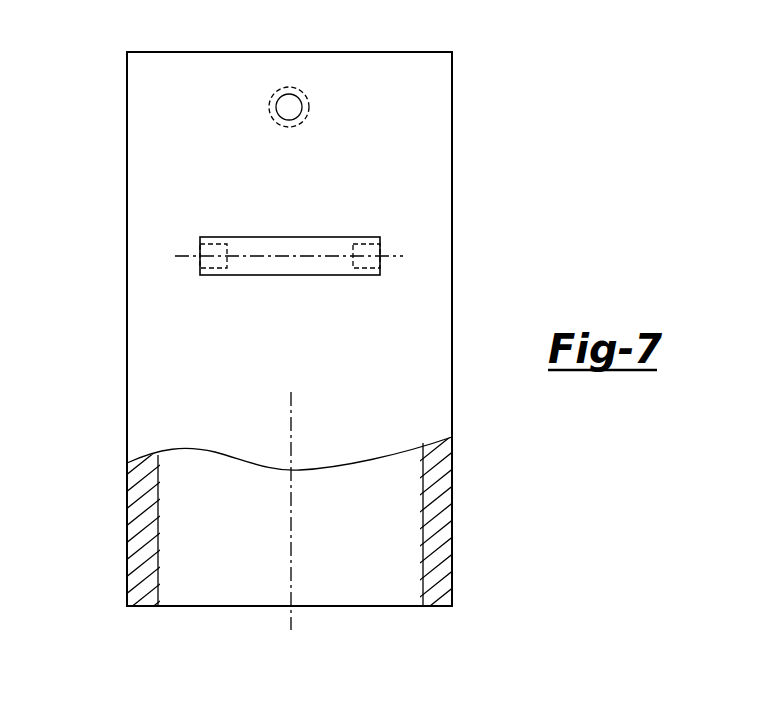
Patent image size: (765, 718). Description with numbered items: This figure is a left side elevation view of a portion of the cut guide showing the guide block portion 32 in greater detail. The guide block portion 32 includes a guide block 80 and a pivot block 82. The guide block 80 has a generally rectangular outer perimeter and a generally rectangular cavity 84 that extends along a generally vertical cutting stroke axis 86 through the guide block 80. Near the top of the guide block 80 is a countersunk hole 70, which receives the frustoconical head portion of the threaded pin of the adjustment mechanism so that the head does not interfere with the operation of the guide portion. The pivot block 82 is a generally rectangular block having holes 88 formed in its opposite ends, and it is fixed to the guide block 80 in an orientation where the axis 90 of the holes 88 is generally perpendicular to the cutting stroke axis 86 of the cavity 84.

The guide block portion 32 is at (484, 187).
The countersunk hole 70 is at (316, 92).
The guide block 80 is at (96, 243).
The pivot block 82 is at (267, 214).
The cavity 84 is at (254, 545).
The cutting stroke axis 86 is at (292, 441).
The holes 88 is at (192, 266).
The axis of the holes 90 is at (306, 256).